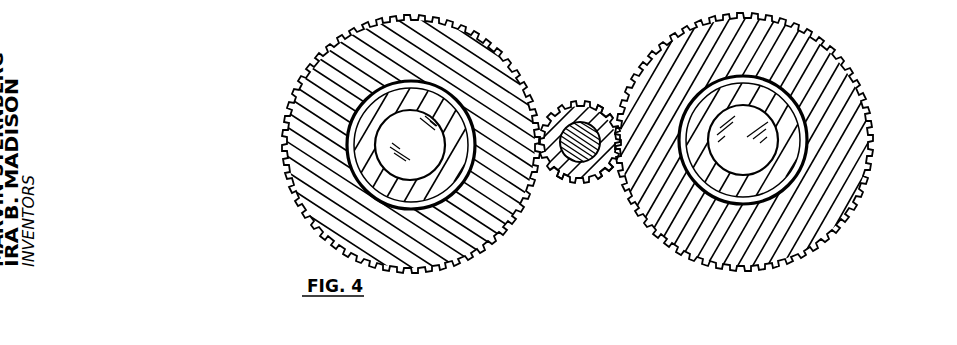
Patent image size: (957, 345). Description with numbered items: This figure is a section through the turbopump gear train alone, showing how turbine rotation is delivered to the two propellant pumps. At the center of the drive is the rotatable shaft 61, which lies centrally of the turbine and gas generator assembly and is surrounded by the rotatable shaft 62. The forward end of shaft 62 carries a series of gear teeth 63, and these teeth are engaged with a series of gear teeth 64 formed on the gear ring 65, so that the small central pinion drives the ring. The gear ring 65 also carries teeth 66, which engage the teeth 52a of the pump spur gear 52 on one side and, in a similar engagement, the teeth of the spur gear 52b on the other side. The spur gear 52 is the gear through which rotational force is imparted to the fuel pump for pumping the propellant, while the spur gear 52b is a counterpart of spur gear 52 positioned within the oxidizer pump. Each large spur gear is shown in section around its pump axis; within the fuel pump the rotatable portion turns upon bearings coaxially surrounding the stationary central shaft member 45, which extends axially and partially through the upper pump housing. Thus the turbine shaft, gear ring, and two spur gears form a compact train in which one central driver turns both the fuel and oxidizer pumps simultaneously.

The stationary central shaft member 45 is at (786, 161).
The spur gear element 52 is at (768, 142).
The teeth of pump spur gear 52a is at (868, 107).
The spur gear 52b is at (497, 231).
The rotatable shaft 61 is at (557, 168).
The rotatable shaft 62 is at (573, 122).
The gear teeth 63 is at (588, 113).
The gear teeth 64 is at (580, 112).
The gear ring 65 is at (583, 173).
The teeth 66 is at (603, 180).